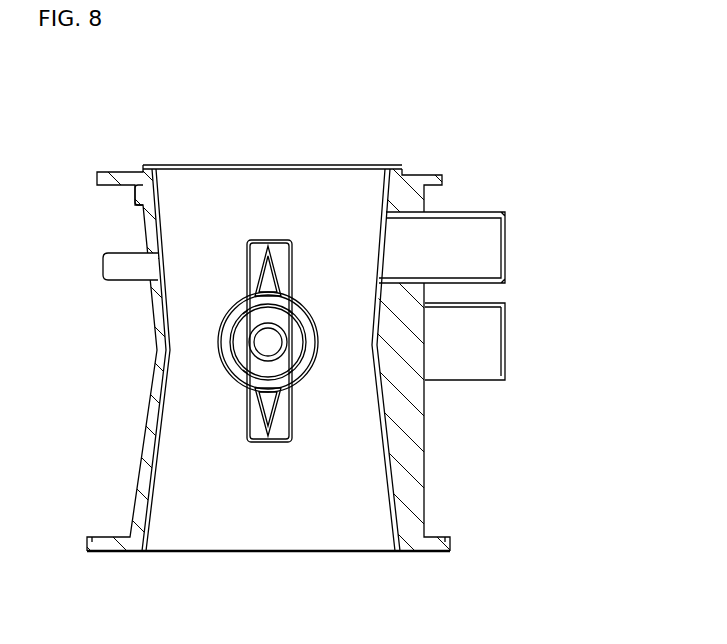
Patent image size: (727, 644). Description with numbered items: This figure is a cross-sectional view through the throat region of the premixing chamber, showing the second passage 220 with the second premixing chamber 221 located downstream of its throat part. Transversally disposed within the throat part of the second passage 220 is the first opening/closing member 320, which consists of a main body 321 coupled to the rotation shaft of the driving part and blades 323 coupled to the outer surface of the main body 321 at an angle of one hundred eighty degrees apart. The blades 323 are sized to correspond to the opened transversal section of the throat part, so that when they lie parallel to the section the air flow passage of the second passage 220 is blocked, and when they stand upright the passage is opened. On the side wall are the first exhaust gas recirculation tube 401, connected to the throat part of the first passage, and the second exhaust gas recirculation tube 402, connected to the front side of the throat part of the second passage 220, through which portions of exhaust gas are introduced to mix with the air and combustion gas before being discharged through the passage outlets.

The second passage 220 is at (268, 191).
The second premixing chamber 221 is at (293, 512).
The first opening/closing member 320 is at (419, 287).
The main body 321 is at (307, 300).
The blades 323 is at (283, 250).
The first exhaust gas recirculation tube 401 is at (490, 345).
The second exhaust gas recirculation tube 402 is at (494, 240).